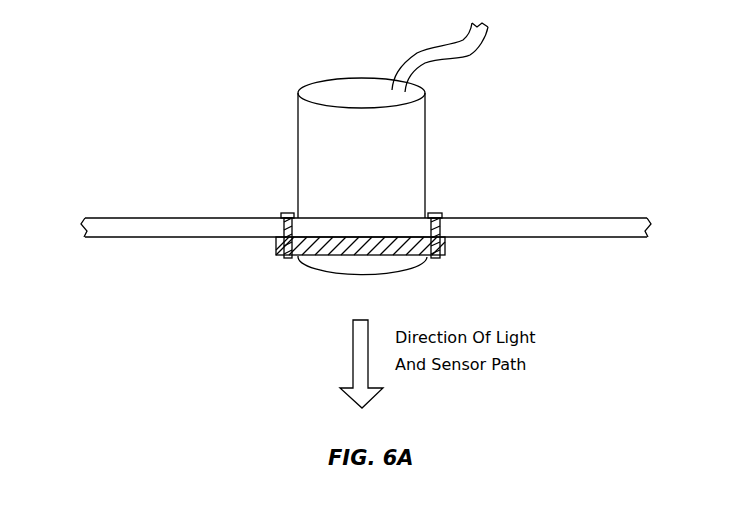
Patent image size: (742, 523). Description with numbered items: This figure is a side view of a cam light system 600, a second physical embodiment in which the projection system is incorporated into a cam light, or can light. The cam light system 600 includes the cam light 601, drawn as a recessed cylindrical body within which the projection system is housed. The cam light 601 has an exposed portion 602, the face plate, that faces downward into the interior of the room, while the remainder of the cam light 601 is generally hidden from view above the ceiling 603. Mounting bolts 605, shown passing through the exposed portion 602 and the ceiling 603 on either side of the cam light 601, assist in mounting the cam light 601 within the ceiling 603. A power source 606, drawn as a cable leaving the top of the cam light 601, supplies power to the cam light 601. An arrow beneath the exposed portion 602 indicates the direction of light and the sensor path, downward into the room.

The cam light system 600 is at (384, 42).
The cam light 601 is at (298, 128).
The exposed portion 602 is at (318, 257).
The ceiling 603 is at (618, 237).
The mounting bolts 605 is at (288, 213).
The power source 606 is at (482, 48).